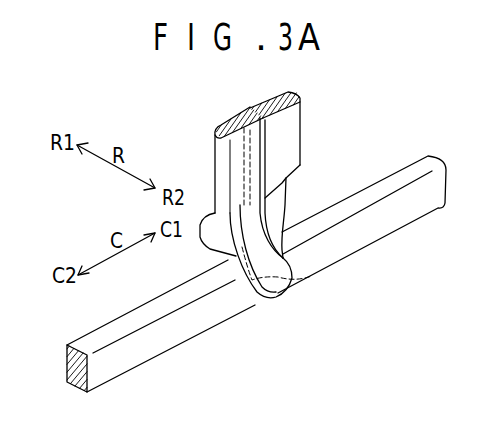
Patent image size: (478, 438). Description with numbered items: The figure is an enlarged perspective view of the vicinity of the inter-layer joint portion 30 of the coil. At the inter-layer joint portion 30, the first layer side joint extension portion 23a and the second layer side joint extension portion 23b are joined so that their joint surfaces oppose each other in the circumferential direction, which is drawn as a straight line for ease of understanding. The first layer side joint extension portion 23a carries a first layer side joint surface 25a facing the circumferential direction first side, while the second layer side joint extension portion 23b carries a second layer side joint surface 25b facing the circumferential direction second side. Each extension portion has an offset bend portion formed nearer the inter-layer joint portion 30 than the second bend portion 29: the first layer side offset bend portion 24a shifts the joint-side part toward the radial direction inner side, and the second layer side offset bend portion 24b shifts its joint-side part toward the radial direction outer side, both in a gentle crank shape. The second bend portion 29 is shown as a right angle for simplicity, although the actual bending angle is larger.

The inter-layer joint portion 30 is at (252, 212).
The first layer side joint surface 25a is at (268, 167).
The second layer side joint surface 25b is at (245, 149).
The first layer side offset bend portion 24a is at (204, 245).
The second layer side offset bend portion 24b is at (294, 189).
The first layer side joint extension portion 23a is at (410, 200).
The second layer side joint extension portion 23b is at (125, 357).
The second bend portion 29 is at (312, 276).